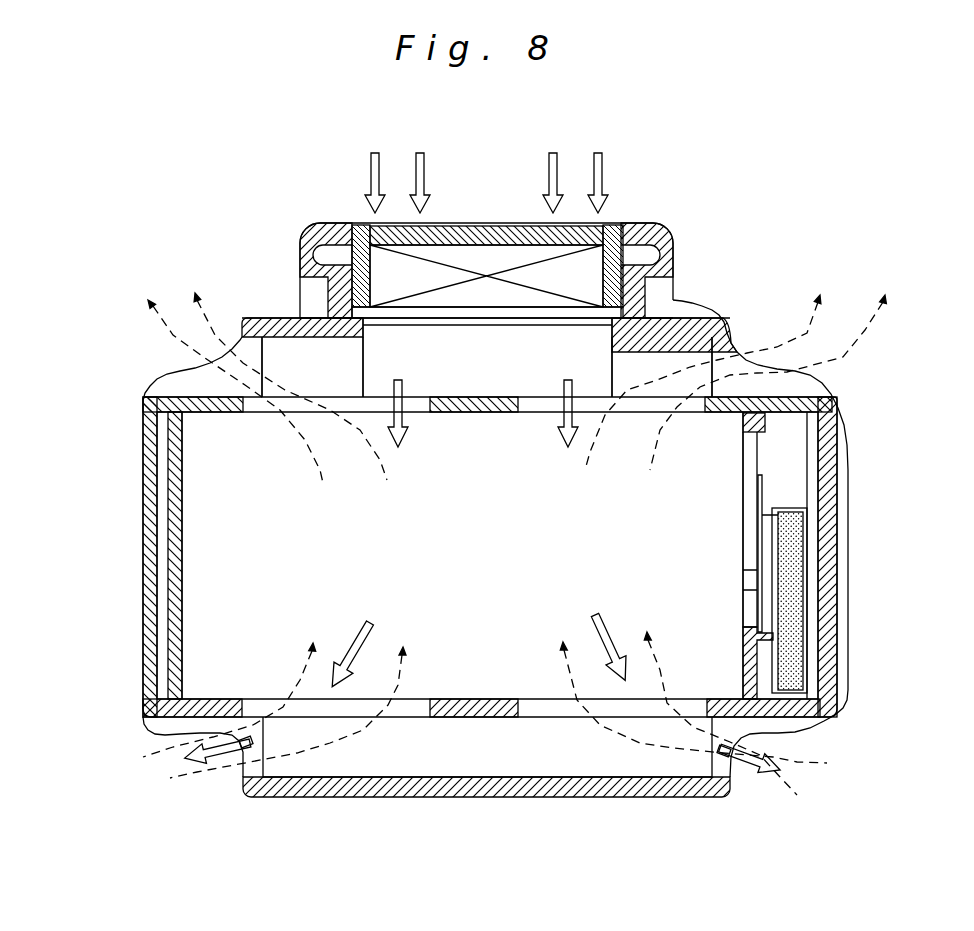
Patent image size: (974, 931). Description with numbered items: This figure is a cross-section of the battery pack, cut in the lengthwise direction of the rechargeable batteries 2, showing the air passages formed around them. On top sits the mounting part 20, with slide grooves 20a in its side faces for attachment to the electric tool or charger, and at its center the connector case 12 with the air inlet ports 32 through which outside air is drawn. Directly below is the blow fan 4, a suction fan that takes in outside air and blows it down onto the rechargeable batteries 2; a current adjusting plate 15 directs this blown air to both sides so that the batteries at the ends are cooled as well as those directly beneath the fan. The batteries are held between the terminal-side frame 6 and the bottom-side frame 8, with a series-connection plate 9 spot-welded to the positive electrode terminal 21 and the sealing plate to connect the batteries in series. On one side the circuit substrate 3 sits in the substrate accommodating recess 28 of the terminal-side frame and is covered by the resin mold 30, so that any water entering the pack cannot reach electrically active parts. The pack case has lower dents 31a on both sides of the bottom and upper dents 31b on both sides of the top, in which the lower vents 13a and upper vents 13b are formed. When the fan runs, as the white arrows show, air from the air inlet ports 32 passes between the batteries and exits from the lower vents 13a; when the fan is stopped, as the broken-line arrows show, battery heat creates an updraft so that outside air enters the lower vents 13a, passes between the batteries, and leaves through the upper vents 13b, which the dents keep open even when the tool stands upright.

The rechargeable battery 2 is at (493, 556).
The circuit substrate 3 is at (777, 567).
The blow fan 4 is at (485, 270).
The terminal-side frame 6 is at (800, 394).
The bottom-side frame 8 is at (168, 530).
The series-connection plate 9 is at (760, 490).
The connector case 12 is at (447, 225).
The lower vent 13a is at (150, 735).
The upper vent 13b is at (180, 369).
The current adjusting plate 15 is at (590, 363).
The mounting part 20 is at (650, 227).
The slide groove 20a is at (675, 275).
The positive electrode terminal 21 is at (750, 453).
The substrate accommodating recess 28 is at (807, 680).
The resin mold 30 is at (797, 617).
The lower dent 31a is at (243, 767).
The upper dent 31b is at (240, 345).
The air inlet port 32 is at (611, 222).